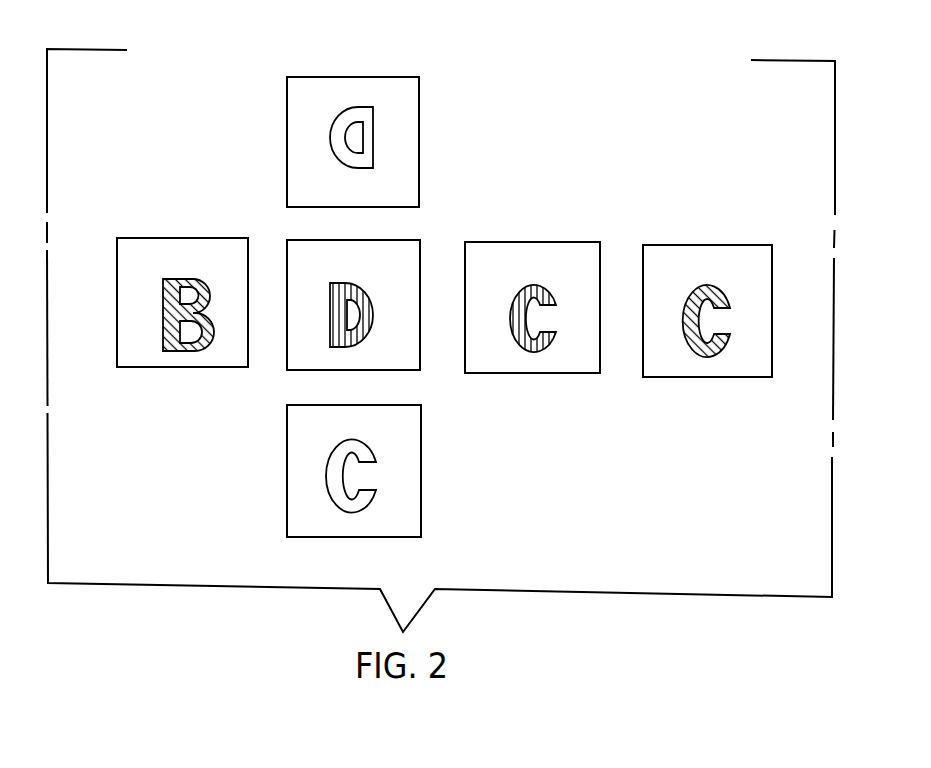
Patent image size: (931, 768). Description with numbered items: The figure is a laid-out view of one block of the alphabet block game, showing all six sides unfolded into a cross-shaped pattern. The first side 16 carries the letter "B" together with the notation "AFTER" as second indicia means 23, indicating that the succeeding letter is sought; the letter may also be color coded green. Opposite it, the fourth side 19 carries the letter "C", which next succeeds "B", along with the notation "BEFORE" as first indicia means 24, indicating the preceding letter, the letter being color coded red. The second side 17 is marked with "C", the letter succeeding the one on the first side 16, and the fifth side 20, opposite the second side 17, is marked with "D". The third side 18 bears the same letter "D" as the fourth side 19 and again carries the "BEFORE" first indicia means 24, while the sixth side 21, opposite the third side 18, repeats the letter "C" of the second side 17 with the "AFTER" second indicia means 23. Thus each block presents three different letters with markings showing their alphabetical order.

The first side 16 is at (216, 352).
The second side 17 is at (408, 495).
The third side 18 is at (397, 357).
The fourth side 19 is at (570, 362).
The fifth side 20 is at (408, 135).
The sixth side 21 is at (730, 368).
The second indicia means 23 is at (192, 243).
The first indicia means 24 is at (320, 242).